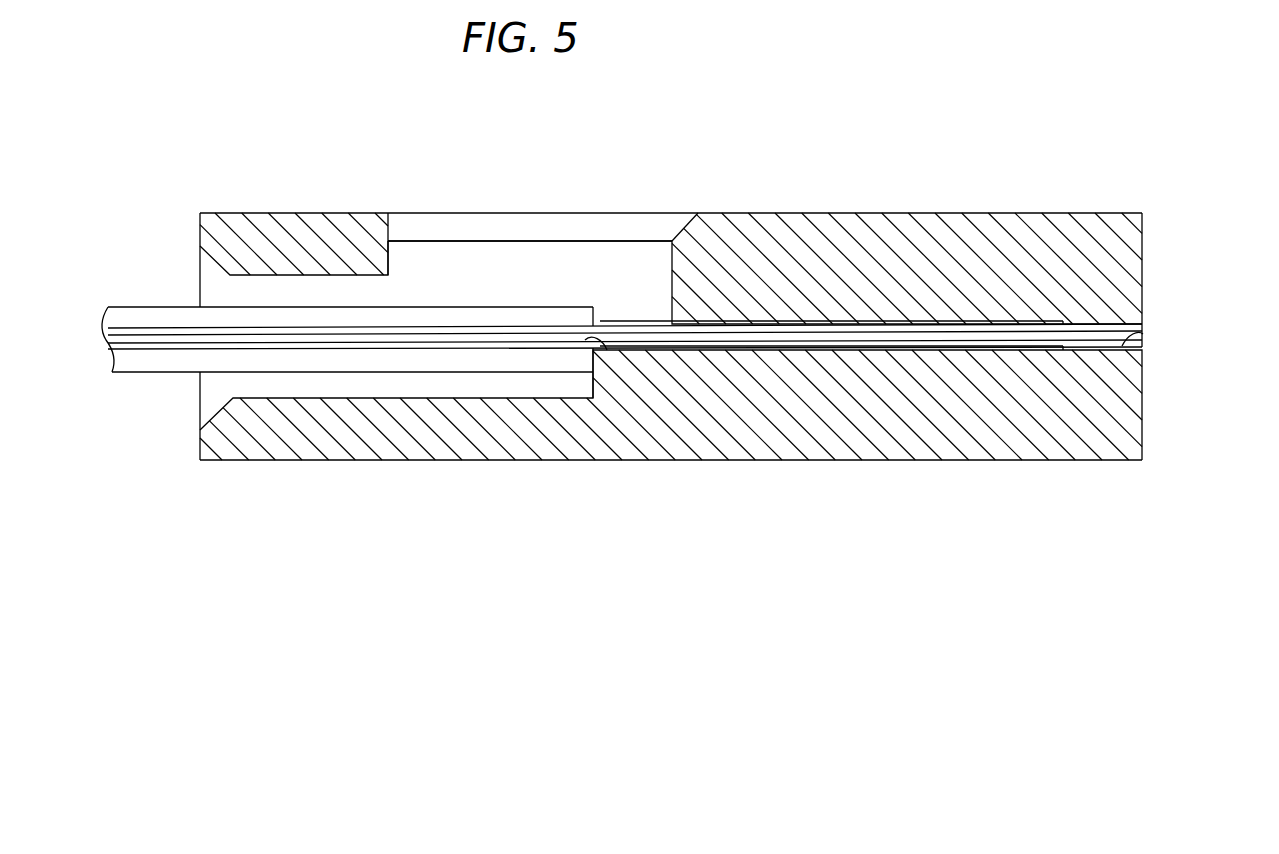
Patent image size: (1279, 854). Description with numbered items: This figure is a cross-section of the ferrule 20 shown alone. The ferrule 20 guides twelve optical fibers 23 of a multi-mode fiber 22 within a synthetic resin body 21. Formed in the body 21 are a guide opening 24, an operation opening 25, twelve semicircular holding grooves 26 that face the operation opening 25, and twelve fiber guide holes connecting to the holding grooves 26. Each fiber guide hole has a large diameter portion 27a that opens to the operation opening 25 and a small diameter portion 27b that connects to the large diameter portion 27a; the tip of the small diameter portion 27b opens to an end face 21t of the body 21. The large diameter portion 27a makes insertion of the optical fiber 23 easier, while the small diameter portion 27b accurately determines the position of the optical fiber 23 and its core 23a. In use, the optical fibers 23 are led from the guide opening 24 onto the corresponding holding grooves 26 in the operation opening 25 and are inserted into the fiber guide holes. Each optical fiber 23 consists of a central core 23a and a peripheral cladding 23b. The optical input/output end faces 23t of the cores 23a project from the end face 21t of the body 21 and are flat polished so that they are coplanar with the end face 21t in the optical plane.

The ferrule 20 is at (816, 134).
The body 21 is at (976, 243).
The end face 21t is at (1143, 238).
The multi-mode fiber 22 is at (362, 362).
The optical fiber 23 is at (625, 421).
The core 23a is at (743, 338).
The cladding 23b is at (818, 347).
The end face 23t is at (1143, 329).
The guide opening 24 is at (290, 379).
The operation opening 25 is at (604, 253).
The holding groove 26 is at (585, 340).
The large diameter portion 27a is at (950, 340).
The small diameter portion 27b is at (1143, 334).